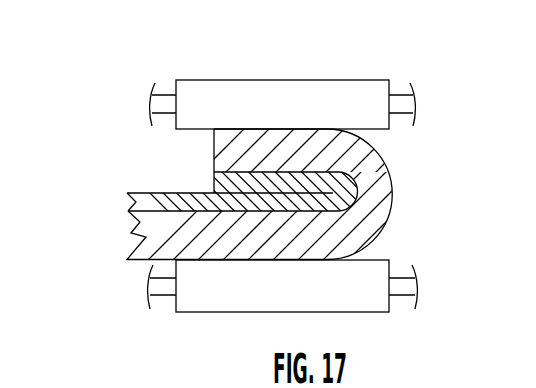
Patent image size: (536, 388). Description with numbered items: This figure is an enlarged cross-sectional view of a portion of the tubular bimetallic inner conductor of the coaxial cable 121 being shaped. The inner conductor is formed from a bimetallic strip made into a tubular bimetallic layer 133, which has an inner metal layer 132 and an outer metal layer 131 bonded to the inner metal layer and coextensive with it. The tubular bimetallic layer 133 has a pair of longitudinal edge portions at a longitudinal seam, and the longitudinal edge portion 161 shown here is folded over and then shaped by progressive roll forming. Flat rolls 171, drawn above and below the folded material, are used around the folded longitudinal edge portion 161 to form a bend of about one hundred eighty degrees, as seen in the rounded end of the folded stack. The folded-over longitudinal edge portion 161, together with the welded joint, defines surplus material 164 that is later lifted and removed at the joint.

The coaxial cable 121 is at (125, 130).
The outer metal layer 131 is at (158, 192).
The inner metal layer 132 is at (147, 235).
The tubular bimetallic layer 133 is at (132, 222).
The longitudinal edge portion 161 is at (387, 162).
The surplus material 164 is at (300, 183).
The flat rolls 171 is at (205, 80).